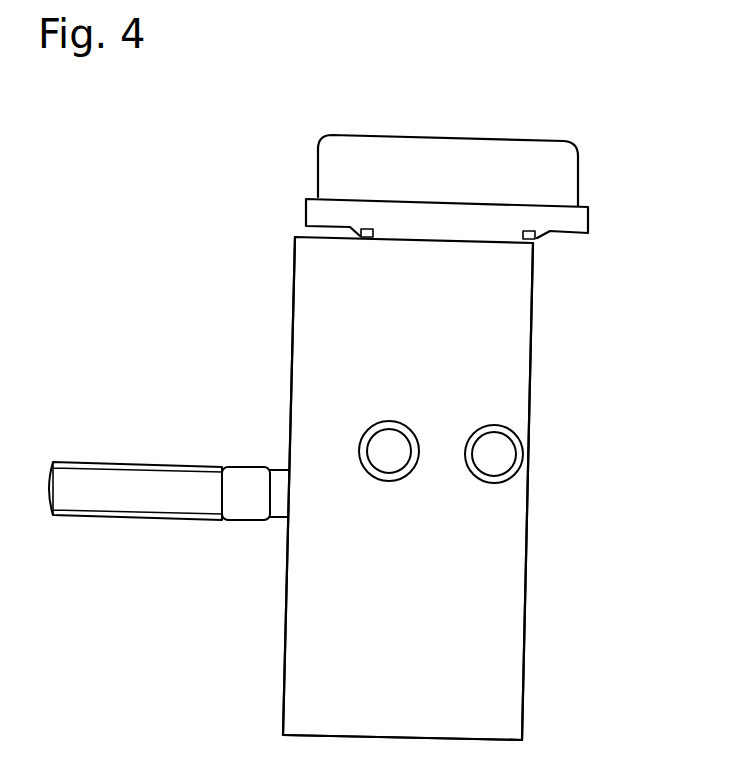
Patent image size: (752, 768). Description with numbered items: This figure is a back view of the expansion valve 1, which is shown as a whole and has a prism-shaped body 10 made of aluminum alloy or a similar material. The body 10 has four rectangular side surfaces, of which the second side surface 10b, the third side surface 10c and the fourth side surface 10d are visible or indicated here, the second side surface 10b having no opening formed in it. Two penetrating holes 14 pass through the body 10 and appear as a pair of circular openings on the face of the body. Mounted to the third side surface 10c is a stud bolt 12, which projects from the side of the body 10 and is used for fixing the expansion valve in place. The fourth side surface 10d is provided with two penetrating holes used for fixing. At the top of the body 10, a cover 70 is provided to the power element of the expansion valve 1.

The expansion valve 1 is at (648, 99).
The cover 70 is at (563, 186).
The body 10 is at (507, 665).
The second side surface 10b is at (527, 538).
The fourth side surface 10d is at (492, 602).
The third side surface 10c is at (285, 620).
The penetrating holes 14 is at (398, 447).
The stud bolt 12 is at (152, 480).